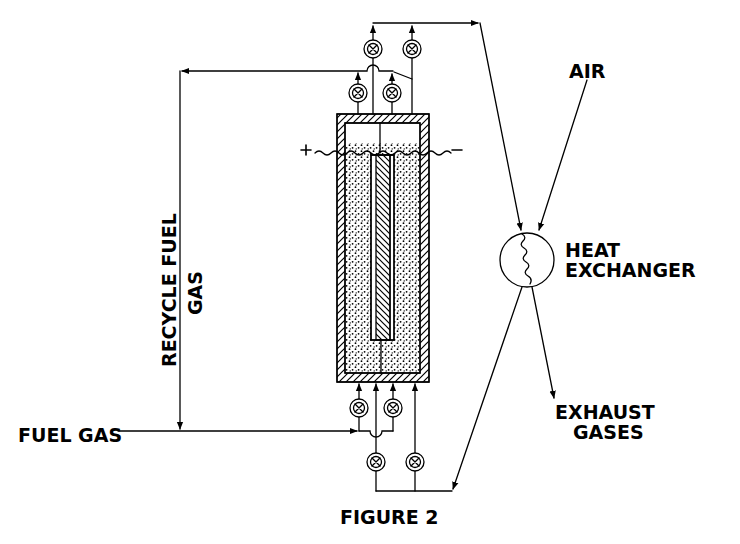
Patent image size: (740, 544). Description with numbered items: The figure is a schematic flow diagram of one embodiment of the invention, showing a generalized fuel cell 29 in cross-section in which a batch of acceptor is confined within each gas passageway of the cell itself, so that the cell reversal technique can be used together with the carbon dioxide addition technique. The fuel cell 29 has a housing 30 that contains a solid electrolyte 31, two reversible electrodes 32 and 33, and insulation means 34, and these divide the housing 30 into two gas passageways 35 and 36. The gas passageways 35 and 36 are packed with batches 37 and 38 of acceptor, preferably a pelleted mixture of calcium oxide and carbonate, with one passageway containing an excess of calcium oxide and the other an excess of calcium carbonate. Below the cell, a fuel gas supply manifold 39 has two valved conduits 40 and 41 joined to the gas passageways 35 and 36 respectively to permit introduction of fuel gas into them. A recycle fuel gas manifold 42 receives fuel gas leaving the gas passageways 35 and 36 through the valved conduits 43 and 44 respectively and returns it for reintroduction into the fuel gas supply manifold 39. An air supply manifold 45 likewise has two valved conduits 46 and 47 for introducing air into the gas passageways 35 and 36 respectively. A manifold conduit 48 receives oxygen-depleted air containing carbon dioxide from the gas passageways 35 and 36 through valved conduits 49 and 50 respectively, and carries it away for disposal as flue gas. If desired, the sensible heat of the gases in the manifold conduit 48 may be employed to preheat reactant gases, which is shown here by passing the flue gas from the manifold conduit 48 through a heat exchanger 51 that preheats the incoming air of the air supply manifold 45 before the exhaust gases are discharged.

The fuel cell 29 is at (336, 178).
The housing 30 is at (347, 265).
The solid electrolyte 31 is at (390, 265).
The reversible electrode 32 is at (420, 233).
The reversible electrode 33 is at (348, 233).
The insulation means 34 is at (381, 133).
The gas passageway 35 is at (358, 205).
The gas passageway 36 is at (408, 205).
The batch of acceptor 37 is at (362, 330).
The batch of acceptor 38 is at (400, 330).
The fuel gas supply manifold 39 is at (150, 432).
The valved conduit 40 is at (359, 418).
The valved conduit 41 is at (393, 428).
The recycle fuel gas manifold 42 is at (180, 182).
The valved conduit 43 is at (358, 105).
The valved conduit 44 is at (404, 77).
The air supply manifold 45 is at (562, 157).
The valved conduit 46 is at (376, 474).
The valved conduit 47 is at (415, 440).
The manifold conduit 48 is at (480, 22).
The valved conduit 49 is at (373, 63).
The valved conduit 50 is at (413, 63).
The heat exchanger 51 is at (517, 241).